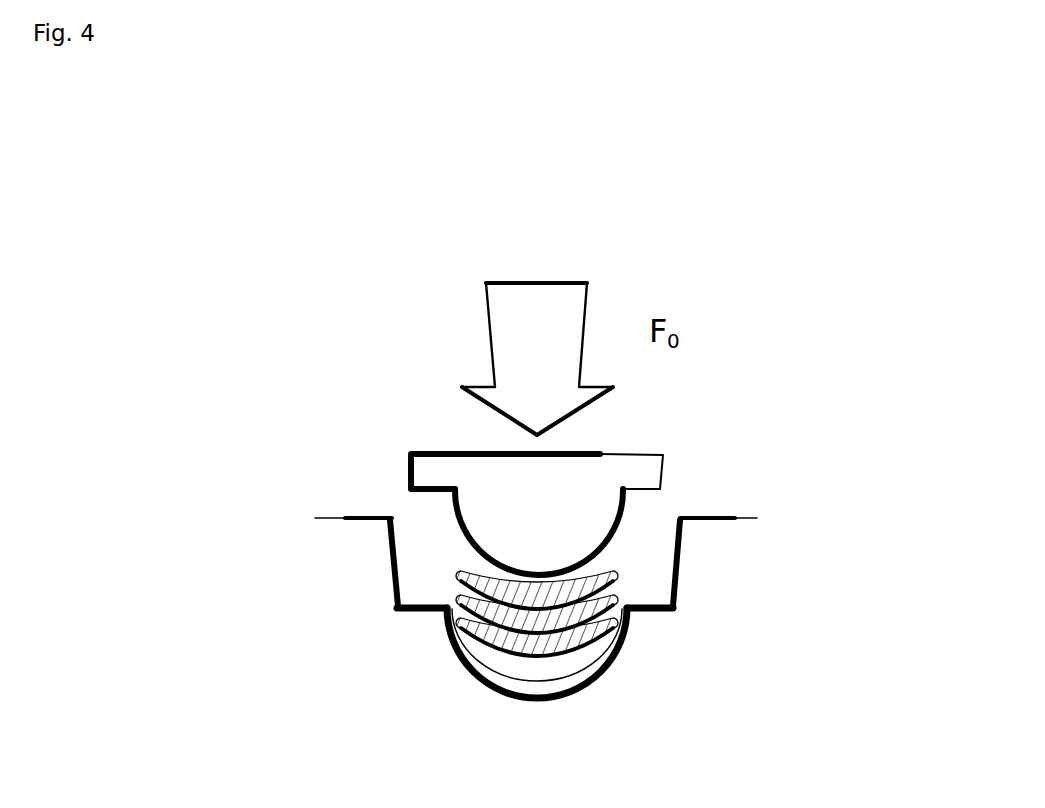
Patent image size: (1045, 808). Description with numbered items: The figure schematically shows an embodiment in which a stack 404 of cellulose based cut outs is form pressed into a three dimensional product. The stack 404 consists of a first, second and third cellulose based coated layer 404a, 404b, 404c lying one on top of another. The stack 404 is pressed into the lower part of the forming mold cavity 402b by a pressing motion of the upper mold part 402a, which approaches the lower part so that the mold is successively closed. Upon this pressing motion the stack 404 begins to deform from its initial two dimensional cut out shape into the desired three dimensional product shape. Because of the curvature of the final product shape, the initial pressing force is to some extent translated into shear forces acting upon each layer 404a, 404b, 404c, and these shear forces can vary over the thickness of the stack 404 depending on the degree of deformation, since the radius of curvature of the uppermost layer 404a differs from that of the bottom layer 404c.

The upper mold part 402a is at (665, 463).
The lower part of the forming mold cavity 402b is at (680, 567).
The stack 404 is at (541, 599).
The first cellulose based coated layer 404a is at (620, 580).
The second cellulose based coated layer 404b is at (450, 594).
The third cellulose based coated layer 404c is at (617, 660).